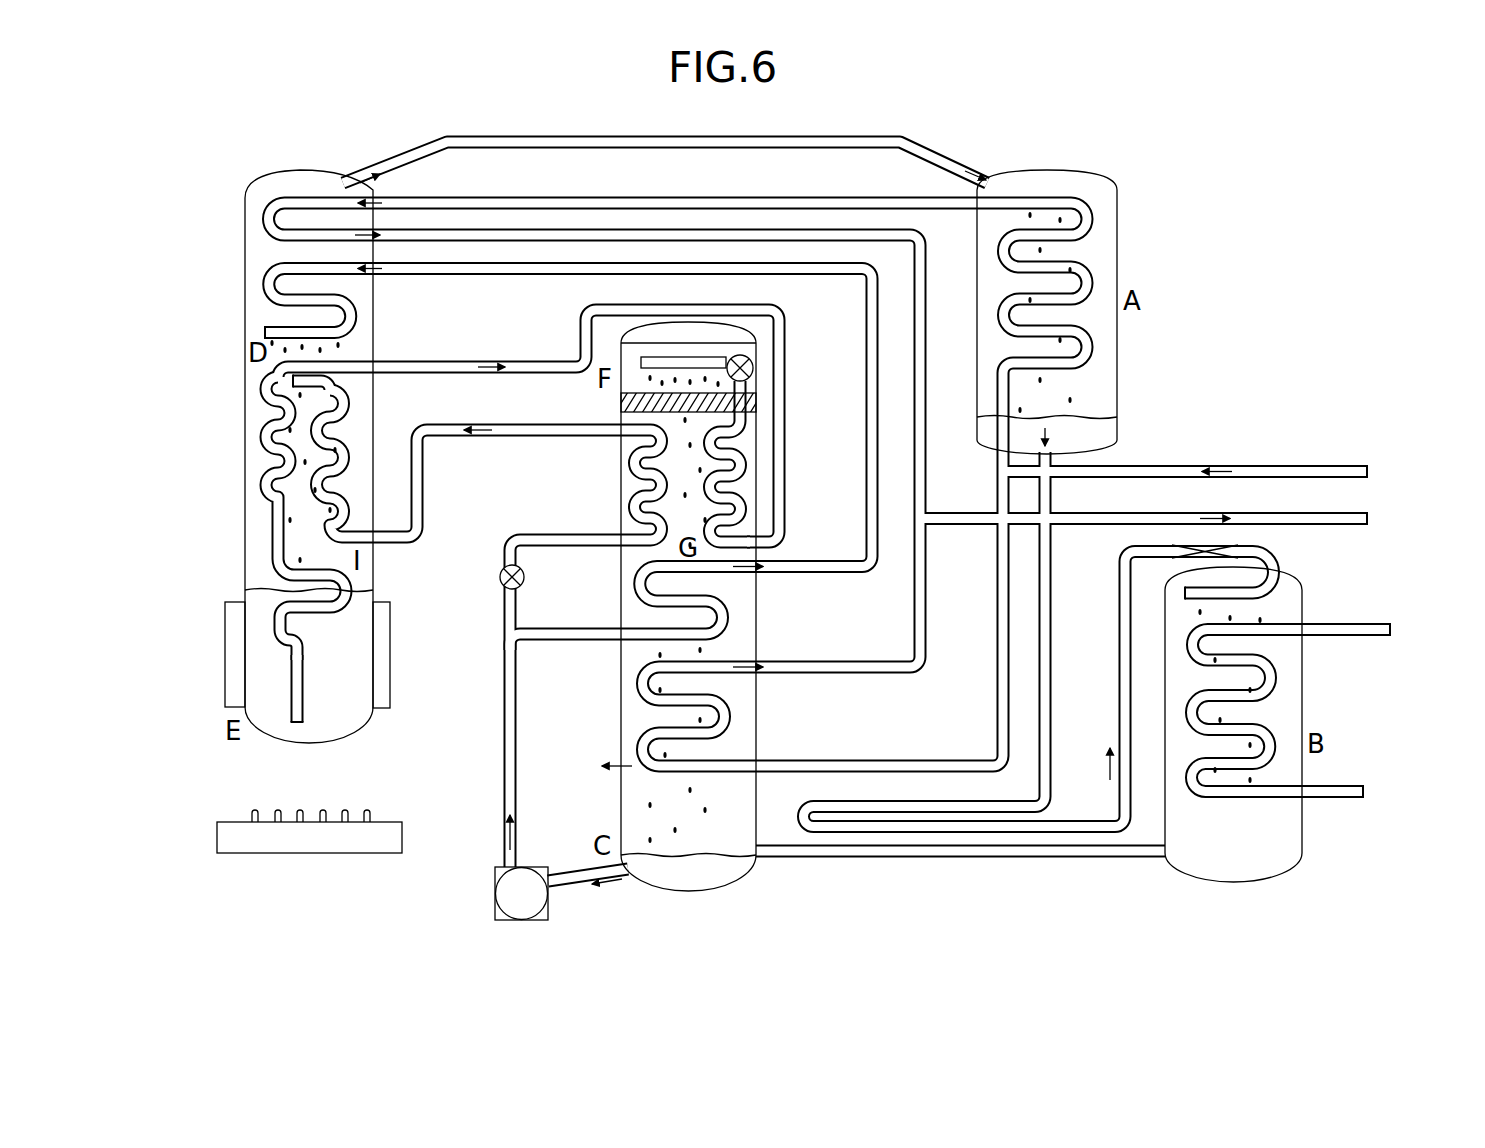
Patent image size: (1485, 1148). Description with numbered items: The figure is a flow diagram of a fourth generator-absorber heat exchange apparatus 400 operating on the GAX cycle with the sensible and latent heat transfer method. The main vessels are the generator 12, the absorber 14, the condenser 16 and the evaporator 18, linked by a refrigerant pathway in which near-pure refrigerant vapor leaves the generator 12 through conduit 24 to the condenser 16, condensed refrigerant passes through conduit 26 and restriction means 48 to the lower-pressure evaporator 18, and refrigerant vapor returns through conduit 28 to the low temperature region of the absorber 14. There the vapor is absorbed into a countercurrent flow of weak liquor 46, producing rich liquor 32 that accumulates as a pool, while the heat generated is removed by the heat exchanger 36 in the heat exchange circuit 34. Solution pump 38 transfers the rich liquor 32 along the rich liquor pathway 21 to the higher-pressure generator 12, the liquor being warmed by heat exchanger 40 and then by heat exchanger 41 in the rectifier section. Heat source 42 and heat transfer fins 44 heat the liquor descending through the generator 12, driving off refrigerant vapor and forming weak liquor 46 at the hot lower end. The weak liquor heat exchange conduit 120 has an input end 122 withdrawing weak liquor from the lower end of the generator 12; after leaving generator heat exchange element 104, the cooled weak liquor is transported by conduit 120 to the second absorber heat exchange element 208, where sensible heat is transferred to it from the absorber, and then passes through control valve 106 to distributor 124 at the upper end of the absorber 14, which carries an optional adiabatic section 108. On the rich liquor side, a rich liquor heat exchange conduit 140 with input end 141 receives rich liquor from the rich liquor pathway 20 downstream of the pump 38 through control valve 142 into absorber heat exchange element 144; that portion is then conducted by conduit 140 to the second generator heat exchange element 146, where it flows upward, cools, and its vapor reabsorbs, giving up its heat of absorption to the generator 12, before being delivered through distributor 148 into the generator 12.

The generator 12 is at (373, 347).
The absorber 14 is at (757, 643).
The condenser 16 is at (1122, 190).
The evaporator 18 is at (1308, 838).
The rich liquor pathway 20 is at (862, 362).
The rich liquor pathway 21 is at (537, 275).
The conduit 24 is at (567, 152).
The conduit 26 is at (1052, 650).
The conduit 28 is at (998, 860).
The rich liquor 32 is at (722, 877).
The heat exchange circuit 34 is at (1370, 493).
The heat exchanger 36 is at (633, 688).
The solution pump 38 is at (527, 866).
The heat exchanger 40 is at (634, 585).
The heat exchanger 41 is at (262, 282).
The heat source 42 is at (402, 838).
The heat transfer fins 44 is at (390, 656).
The weak liquor 46 is at (338, 720).
The restriction means 48 is at (1175, 548).
The heat exchange element 104 is at (262, 480).
The control valve 106 is at (754, 368).
The adiabatic section 108 is at (621, 400).
The weak liquor heat exchange conduit 120 is at (457, 362).
The input end 122 is at (297, 725).
The distributor 124 is at (718, 355).
The rich liquor heat exchange conduit 140 is at (533, 428).
The input end 141 is at (503, 635).
The control valve 142 is at (500, 577).
The heat exchange element 144 is at (622, 480).
The second generator heat exchange element 146 is at (345, 432).
The distributor 148 is at (345, 380).
The second absorber heat exchange element 208 is at (728, 465).
The generator-absorber heat exchange apparatus 400 is at (702, 936).